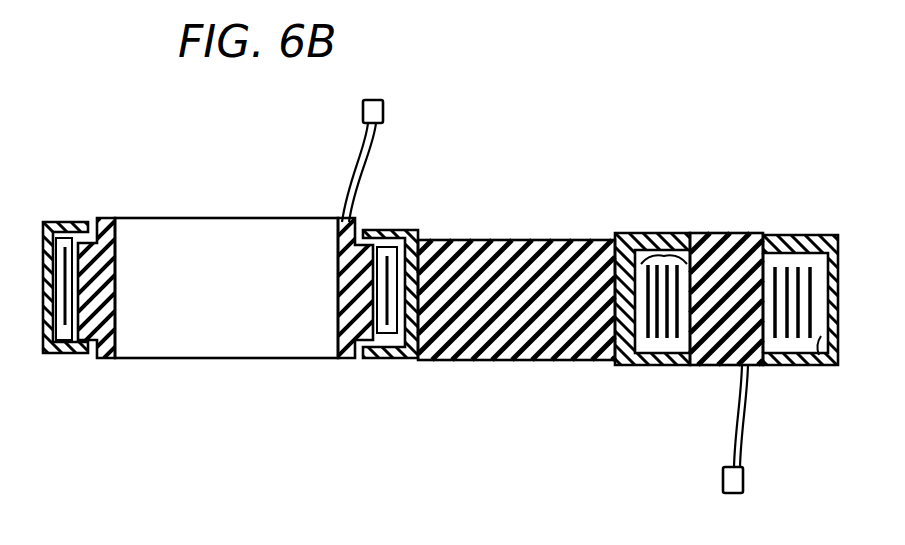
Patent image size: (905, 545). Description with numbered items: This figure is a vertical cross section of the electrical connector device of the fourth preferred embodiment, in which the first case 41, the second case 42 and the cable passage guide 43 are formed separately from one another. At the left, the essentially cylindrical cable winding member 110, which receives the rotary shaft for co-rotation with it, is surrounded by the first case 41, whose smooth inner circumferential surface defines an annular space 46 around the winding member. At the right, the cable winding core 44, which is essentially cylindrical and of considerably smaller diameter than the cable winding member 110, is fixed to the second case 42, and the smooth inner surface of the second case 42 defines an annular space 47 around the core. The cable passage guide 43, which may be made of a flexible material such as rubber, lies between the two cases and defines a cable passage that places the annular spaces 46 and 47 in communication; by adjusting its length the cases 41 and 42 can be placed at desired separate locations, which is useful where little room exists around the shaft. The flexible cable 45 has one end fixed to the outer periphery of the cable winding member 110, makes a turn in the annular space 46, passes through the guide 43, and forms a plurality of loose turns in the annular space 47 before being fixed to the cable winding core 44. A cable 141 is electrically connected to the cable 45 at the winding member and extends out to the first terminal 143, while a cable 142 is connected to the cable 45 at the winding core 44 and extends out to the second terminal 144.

The cable winding member 110 is at (105, 218).
The first case 41 is at (52, 355).
The second case 42 is at (656, 368).
The cable passage guide 43 is at (568, 240).
The cable winding core 44 is at (745, 248).
The flexible cable 45 is at (72, 355).
The annular space 46 is at (406, 230).
The annular space 47 is at (830, 367).
The cable 141 is at (374, 137).
The cable 142 is at (730, 440).
The first terminal 143 is at (384, 110).
The second terminal 144 is at (745, 481).